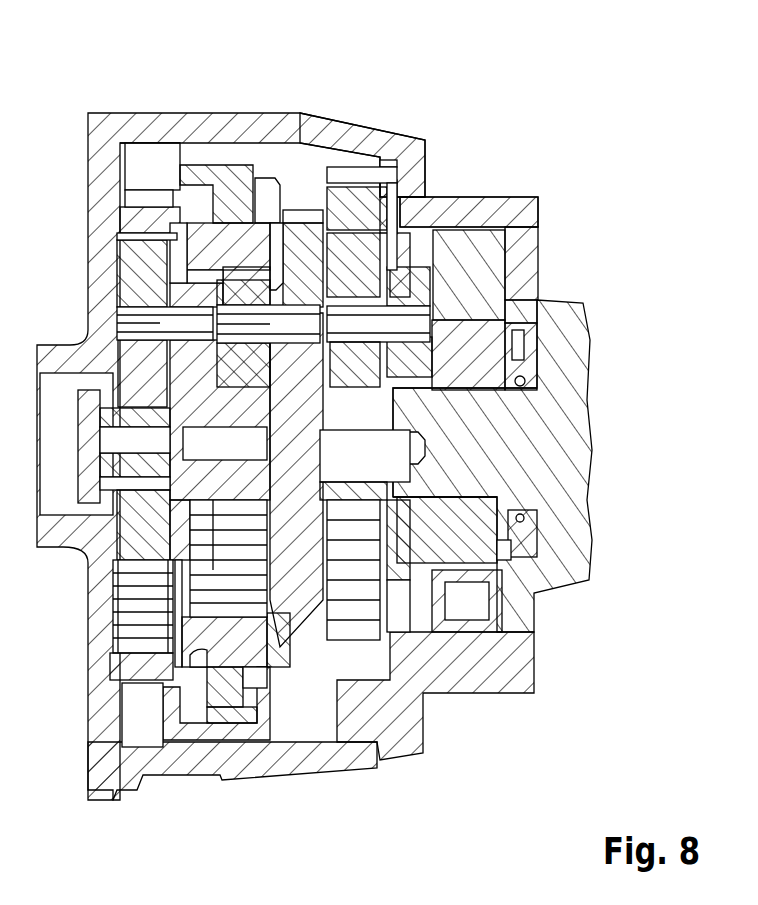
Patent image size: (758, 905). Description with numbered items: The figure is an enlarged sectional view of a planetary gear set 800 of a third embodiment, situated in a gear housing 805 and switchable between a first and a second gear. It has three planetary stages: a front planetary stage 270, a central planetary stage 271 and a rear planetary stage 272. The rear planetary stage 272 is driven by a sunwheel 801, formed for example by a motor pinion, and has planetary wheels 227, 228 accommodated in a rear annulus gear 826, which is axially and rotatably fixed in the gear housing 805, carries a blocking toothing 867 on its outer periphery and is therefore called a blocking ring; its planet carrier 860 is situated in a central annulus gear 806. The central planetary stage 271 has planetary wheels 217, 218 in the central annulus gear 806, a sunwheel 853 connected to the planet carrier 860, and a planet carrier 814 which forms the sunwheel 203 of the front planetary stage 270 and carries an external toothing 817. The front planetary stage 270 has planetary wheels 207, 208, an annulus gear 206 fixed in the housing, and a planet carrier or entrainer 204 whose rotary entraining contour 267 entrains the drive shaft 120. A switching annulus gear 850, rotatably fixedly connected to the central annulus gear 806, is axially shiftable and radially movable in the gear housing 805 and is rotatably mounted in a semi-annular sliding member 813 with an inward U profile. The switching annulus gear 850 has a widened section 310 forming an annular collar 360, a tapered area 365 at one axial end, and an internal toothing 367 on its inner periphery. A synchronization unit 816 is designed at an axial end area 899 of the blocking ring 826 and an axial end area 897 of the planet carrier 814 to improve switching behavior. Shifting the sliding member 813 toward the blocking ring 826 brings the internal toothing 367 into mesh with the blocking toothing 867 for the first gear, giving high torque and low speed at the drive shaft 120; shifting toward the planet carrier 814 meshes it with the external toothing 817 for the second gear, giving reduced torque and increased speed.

The planetary gear set 800 is at (557, 140).
The drive shaft 120 is at (540, 453).
The sunwheel 203 is at (353, 430).
The planet carrier or entrainer 204 is at (410, 360).
The annulus gear 206 is at (397, 182).
The planetary wheel 207 is at (360, 245).
The planetary wheel 208 is at (455, 545).
The planetary wheel 217 is at (245, 290).
The planetary wheel 218 is at (270, 600).
The planetary wheel 227 is at (143, 283).
The planetary wheel 228 is at (233, 592).
The rotary entraining contour 267 is at (510, 545).
The front planetary stage 270 is at (358, 642).
The central planetary stage 271 is at (262, 657).
The rear planetary stage 272 is at (143, 688).
The widened section 310 is at (217, 173).
The annular collar 360 is at (257, 660).
The tapered area 365 is at (308, 213).
The internal toothing 367 is at (230, 210).
The sunwheel 801 is at (92, 402).
The gear housing 805 is at (372, 133).
The central annulus gear 806 is at (235, 690).
The sliding member 813 is at (227, 733).
The planet carrier 814 is at (380, 610).
The synchronization unit 816 is at (180, 212).
The external toothing 817 is at (332, 213).
The rear annulus gear 826 is at (107, 167).
The switching annulus gear 850 is at (172, 205).
The sunwheel 853 is at (420, 460).
The planet carrier 860 is at (145, 572).
The blocking toothing 867 is at (152, 198).
The axial end area 897 is at (277, 213).
The axial end area 899 is at (180, 237).